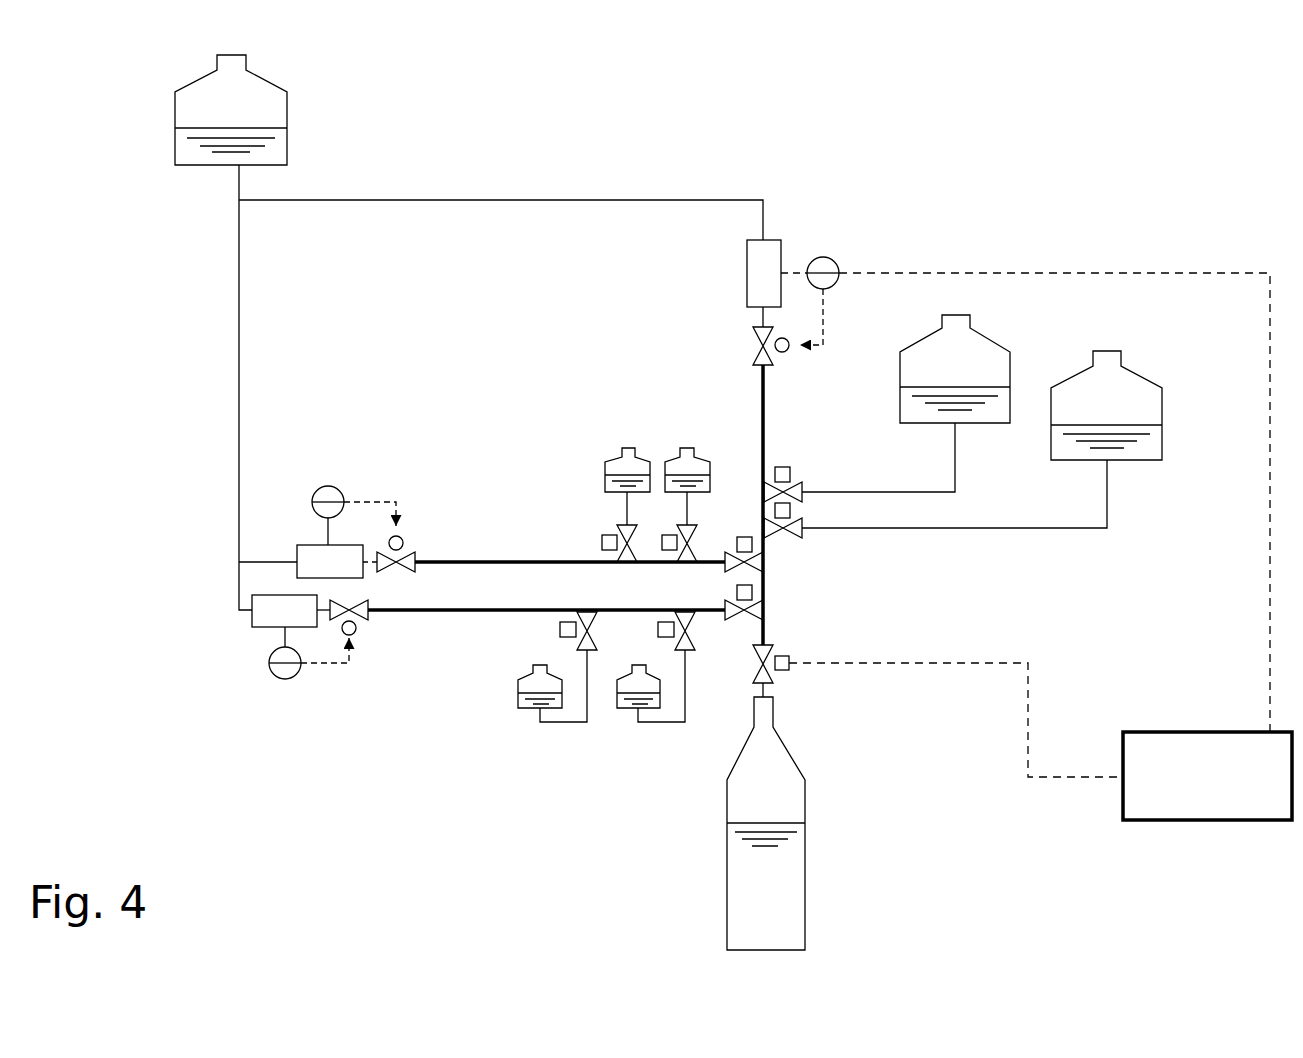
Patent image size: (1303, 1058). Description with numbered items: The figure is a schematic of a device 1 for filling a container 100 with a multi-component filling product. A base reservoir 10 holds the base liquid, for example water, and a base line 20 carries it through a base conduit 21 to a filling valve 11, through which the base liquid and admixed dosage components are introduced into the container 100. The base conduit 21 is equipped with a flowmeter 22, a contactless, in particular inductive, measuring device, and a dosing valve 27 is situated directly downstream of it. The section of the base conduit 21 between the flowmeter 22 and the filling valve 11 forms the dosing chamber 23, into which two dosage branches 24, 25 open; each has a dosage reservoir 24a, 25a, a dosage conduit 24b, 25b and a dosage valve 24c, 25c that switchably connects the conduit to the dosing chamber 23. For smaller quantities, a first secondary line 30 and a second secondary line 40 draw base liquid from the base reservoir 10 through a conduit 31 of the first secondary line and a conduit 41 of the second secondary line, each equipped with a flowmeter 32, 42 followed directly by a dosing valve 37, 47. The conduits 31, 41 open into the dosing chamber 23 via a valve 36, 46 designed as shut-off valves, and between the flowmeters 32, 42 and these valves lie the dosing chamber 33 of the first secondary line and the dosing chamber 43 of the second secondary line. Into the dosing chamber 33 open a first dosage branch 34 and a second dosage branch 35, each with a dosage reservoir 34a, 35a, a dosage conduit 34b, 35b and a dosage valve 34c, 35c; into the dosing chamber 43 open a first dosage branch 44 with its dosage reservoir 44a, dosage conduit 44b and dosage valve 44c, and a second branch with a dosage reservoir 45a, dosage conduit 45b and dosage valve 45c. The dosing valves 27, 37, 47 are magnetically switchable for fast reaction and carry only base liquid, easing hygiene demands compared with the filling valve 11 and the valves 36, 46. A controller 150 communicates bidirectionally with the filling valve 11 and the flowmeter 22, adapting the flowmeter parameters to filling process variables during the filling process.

The device 1 is at (800, 165).
The base reservoir 10 is at (287, 100).
The filling valve 11 is at (778, 666).
The base line 20 is at (843, 345).
The base conduit 21 is at (610, 200).
The flowmeter of the base line 22 is at (781, 262).
The dosing chamber of the base line 23 is at (763, 423).
The dosage branch 24 is at (905, 480).
The dosage reservoir 24a is at (977, 332).
The dosage conduit 24b is at (957, 470).
The dosage valve 24c is at (794, 486).
The dosage branch 25 is at (1057, 553).
The dosage reservoir 25a is at (1127, 370).
The dosage conduit 25b is at (1088, 529).
The dosage valve 25c is at (802, 535).
The dosing valve 27 is at (762, 345).
The first secondary line 30 is at (498, 533).
The conduit of the first secondary line 31 is at (237, 496).
The flowmeter of the first secondary line 32 is at (297, 552).
The dosing chamber of the first secondary line 33 is at (575, 560).
The first dosage branch of the first secondary line 34 is at (593, 468).
The dosage reservoir 34a is at (613, 460).
The dosage conduit 34b is at (625, 512).
The dosage valve 34c is at (632, 535).
The second dosage branch of the first secondary line 35 is at (698, 445).
The dosage reservoir 35a is at (673, 458).
The dosage conduit 35b is at (687, 512).
The dosage valve 35c is at (688, 535).
The valve of the first secondary line 36 is at (763, 563).
The dosing valve 37 is at (387, 533).
The second secondary line 40 is at (443, 635).
The conduit of the second secondary line 41 is at (250, 596).
The flowmeter of the second secondary line 42 is at (253, 627).
The dosing chamber of the second secondary line 43 is at (520, 612).
The first dosage branch of the second secondary line 44 is at (517, 757).
The dosage reservoir 44a is at (520, 708).
The dosage conduit 44b is at (570, 722).
The dosage valve 44c is at (578, 620).
The dosage reservoir 45a is at (628, 710).
The dosage conduit 45b is at (672, 722).
The dosage valve 45c is at (685, 625).
The valve of the second secondary line 46 is at (760, 608).
The dosing valve 47 is at (348, 638).
The container 100 is at (800, 808).
The controller 150 is at (1207, 776).